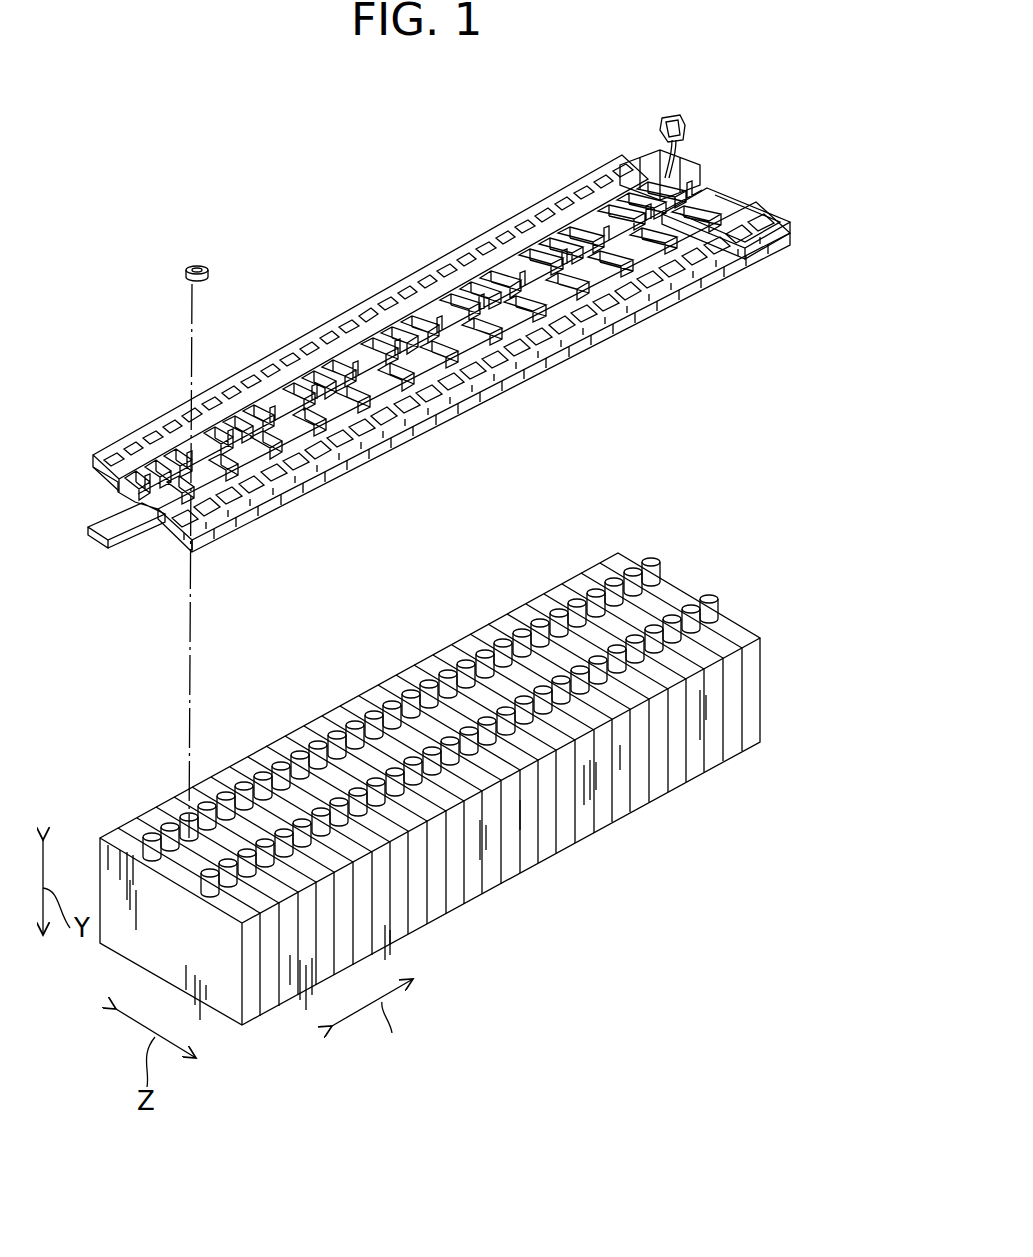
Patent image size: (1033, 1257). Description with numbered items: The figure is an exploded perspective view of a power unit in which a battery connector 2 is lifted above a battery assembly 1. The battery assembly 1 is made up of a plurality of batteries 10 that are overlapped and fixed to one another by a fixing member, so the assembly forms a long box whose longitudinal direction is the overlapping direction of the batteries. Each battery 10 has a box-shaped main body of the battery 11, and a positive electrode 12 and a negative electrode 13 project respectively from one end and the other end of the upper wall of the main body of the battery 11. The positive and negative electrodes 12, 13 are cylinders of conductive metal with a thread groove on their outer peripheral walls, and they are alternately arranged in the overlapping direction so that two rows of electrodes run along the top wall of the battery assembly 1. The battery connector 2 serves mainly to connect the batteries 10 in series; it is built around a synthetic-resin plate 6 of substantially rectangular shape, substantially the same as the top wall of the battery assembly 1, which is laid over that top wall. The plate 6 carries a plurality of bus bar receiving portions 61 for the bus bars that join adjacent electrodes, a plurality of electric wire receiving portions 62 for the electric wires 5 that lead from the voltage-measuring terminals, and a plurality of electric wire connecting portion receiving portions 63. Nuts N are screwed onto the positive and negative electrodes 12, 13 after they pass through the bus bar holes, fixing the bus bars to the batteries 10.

The battery assembly 1 is at (714, 566).
The battery connector 2 is at (780, 110).
The electric wires 5 is at (677, 148).
The plate 6 is at (771, 195).
The batteries 10 is at (745, 790).
The main body of the battery 11 is at (227, 988).
The positive electrode 12 is at (595, 592).
The negative electrode 13 is at (613, 580).
The bus bar receiving portions 61 is at (293, 345).
The electric wire receiving portions 62 is at (313, 338).
The electric wire connecting portion receiving portions 63 is at (305, 342).
The nuts N is at (205, 266).